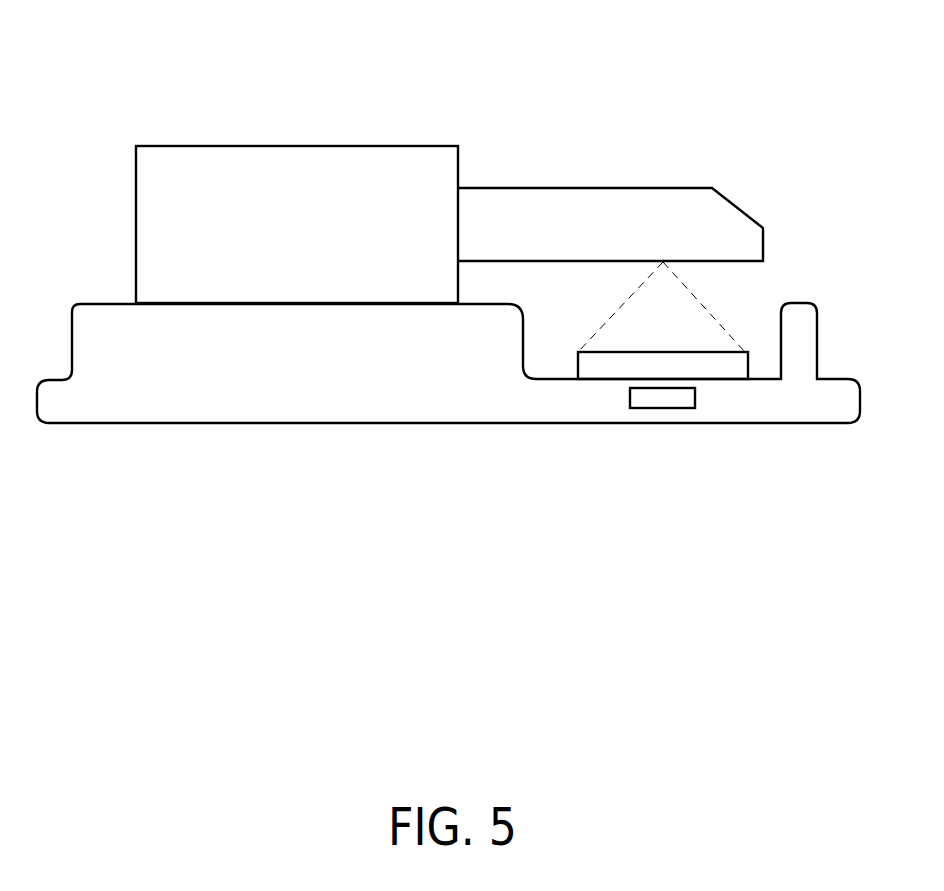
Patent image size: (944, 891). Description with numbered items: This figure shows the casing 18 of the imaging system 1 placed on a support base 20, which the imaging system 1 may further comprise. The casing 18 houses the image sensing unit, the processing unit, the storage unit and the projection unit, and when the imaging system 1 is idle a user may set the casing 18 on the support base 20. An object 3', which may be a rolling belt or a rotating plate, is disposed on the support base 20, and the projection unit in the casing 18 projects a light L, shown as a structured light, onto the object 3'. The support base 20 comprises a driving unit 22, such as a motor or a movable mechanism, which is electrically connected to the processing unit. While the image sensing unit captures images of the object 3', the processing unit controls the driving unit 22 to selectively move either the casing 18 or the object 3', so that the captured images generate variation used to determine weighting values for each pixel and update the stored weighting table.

The imaging system 1 is at (448, 263).
The casing 18 is at (202, 145).
The support base 20 is at (318, 398).
The driving unit 22 is at (665, 400).
The object 3' is at (666, 426).
The light L is at (700, 300).